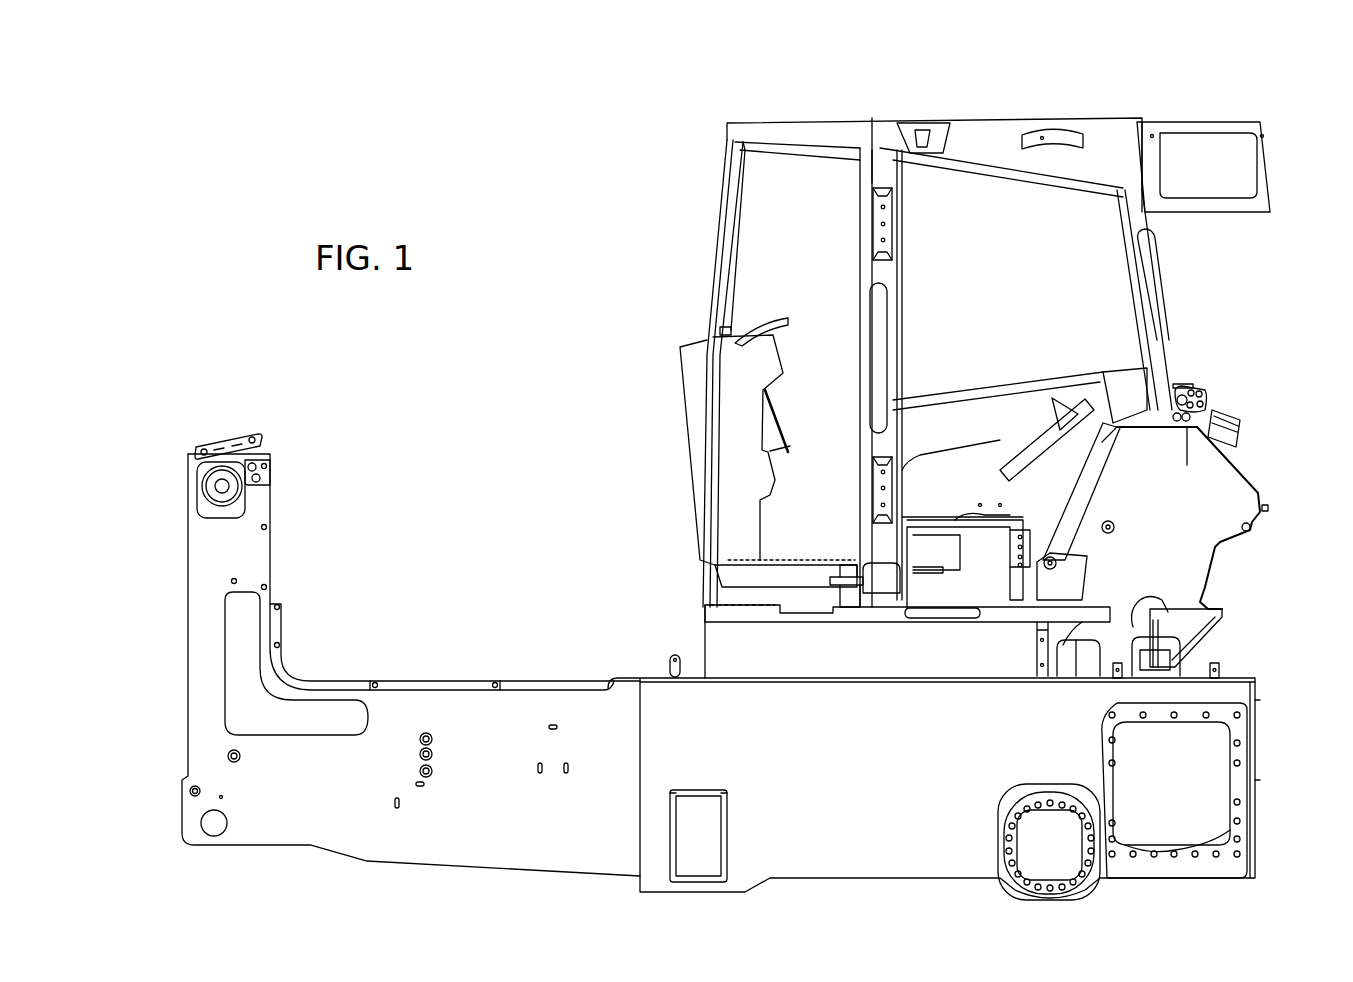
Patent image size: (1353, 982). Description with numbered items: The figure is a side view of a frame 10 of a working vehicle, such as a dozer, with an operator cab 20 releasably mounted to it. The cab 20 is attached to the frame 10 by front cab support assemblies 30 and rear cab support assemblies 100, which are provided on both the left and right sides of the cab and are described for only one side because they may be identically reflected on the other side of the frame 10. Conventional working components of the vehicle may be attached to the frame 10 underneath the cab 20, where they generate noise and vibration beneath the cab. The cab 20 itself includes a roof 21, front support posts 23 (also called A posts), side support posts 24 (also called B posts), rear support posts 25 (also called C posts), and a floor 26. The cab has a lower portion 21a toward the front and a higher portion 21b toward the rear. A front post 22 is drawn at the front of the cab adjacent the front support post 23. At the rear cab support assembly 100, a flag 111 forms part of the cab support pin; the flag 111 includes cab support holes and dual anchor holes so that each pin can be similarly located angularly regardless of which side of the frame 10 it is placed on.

The frame 10 is at (457, 514).
The operator cab 20 is at (905, 354).
The roof 21 is at (1000, 117).
The lower portion 21a is at (778, 567).
The higher portion 21b is at (1060, 447).
The front pillar 22 is at (712, 229).
The front support post 23 is at (743, 207).
The side support post 24 is at (860, 257).
The rear support post 25 is at (1128, 277).
The floor 26 is at (800, 560).
The front cab support assembly 30 is at (852, 615).
The rear cab support assembly 100 is at (1200, 380).
The flag 111 is at (1210, 398).